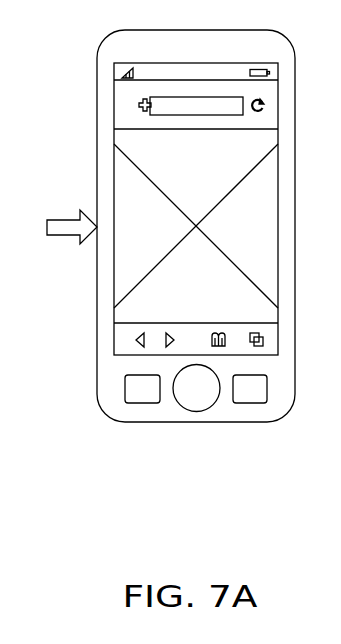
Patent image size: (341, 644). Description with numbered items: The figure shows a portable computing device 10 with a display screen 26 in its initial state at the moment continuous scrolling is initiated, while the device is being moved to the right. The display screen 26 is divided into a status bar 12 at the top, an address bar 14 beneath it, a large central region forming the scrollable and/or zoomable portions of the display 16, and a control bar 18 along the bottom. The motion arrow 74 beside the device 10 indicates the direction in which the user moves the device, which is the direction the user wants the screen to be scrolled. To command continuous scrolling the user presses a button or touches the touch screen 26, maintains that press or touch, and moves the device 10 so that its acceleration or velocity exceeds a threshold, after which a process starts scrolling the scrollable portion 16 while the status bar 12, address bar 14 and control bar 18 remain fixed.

The computing device 10 is at (125, 43).
The status bar 12 is at (118, 68).
The address bar 14 is at (122, 91).
The scrollable and/or zoomable portions of the display 16 is at (133, 264).
The control bar 18 is at (125, 340).
The display screen 26 is at (113, 368).
The motion arrow 74 is at (68, 227).